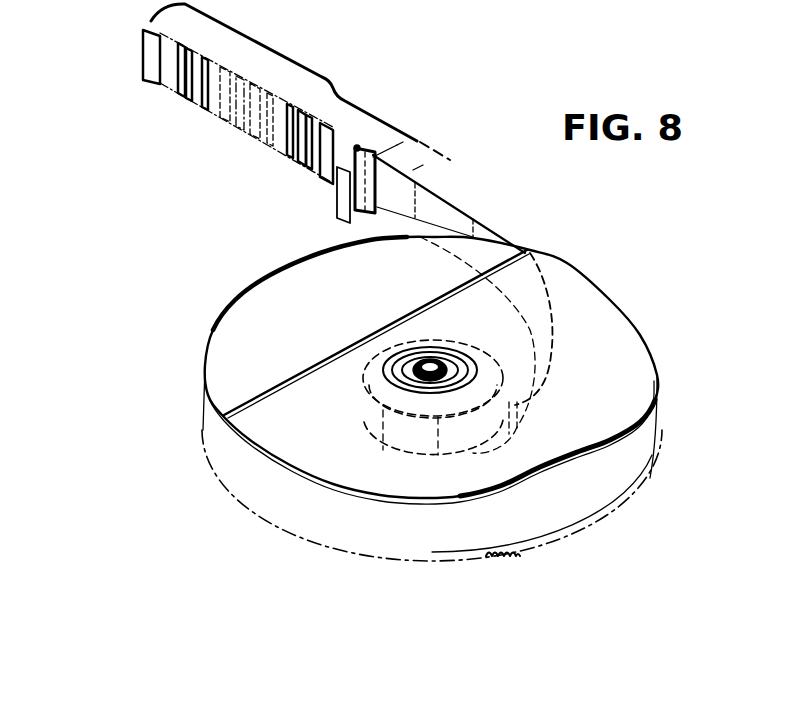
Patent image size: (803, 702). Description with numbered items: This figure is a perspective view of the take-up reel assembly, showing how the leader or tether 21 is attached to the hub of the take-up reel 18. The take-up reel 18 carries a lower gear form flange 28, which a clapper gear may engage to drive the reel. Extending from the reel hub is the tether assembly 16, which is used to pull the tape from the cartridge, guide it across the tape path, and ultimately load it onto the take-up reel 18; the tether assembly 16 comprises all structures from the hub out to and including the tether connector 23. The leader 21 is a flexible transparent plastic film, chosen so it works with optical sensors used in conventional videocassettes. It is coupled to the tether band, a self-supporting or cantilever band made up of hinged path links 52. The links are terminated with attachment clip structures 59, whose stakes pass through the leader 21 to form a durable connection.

The tether assembly 16 is at (300, 93).
The tether connector 23 is at (143, 57).
The path links 52 is at (200, 100).
The attachment clip structures 59 is at (337, 211).
The leader 21 is at (453, 203).
The take-up reel 18 is at (598, 278).
The lower gear form flange 28 is at (511, 559).